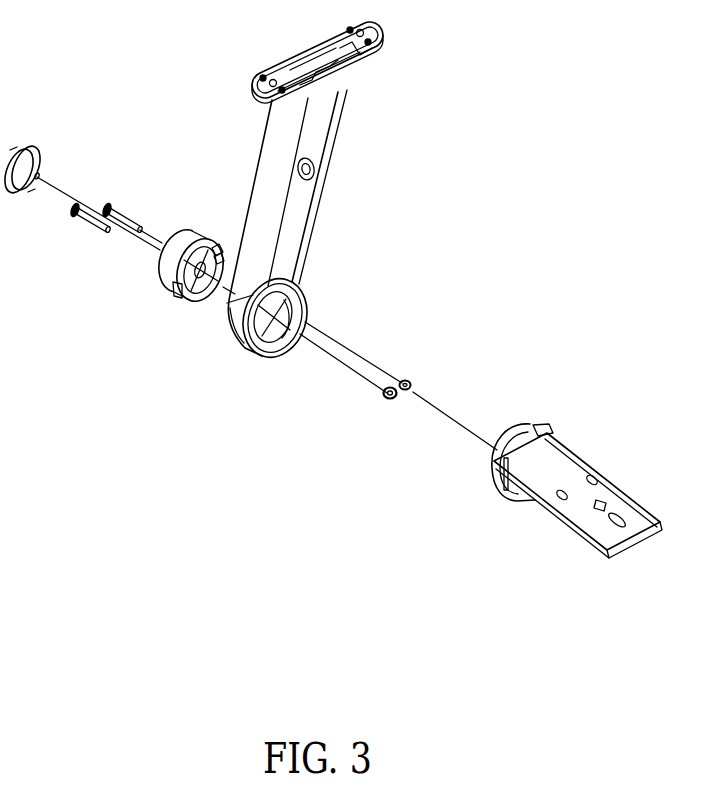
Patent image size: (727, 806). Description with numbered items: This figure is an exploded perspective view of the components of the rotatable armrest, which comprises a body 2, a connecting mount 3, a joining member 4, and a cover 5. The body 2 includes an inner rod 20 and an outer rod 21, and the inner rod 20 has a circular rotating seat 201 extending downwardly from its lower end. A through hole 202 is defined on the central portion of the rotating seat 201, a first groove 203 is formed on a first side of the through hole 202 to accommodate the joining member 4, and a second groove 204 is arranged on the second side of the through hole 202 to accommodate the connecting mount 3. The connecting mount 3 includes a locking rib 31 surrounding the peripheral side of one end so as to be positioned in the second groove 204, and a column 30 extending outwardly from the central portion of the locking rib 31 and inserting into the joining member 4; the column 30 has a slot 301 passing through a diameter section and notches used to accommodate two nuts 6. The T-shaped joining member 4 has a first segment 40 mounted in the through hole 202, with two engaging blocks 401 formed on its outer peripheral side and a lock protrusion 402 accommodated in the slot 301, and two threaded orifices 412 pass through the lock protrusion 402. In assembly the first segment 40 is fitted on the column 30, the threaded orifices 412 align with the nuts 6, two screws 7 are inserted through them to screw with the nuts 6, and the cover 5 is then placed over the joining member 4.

The body 2 is at (556, 150).
The connecting mount 3 is at (528, 456).
The column 30 is at (469, 431).
The slot 301 is at (497, 458).
The locking rib 31 is at (540, 430).
The joining member 4 is at (146, 253).
The first segment 40 is at (190, 257).
The engaging blocks 401 is at (205, 250).
The lock protrusion 402 is at (216, 248).
The threaded orifices 412 is at (170, 295).
The cover 5 is at (38, 172).
The nuts 6 is at (408, 378).
The screws 7 is at (122, 204).
The inner rod 20 is at (281, 227).
The rotating seat 201 is at (243, 342).
The through hole 202 is at (301, 289).
The first groove 203 is at (310, 303).
The second groove 204 is at (241, 336).
The outer rod 21 is at (330, 98).